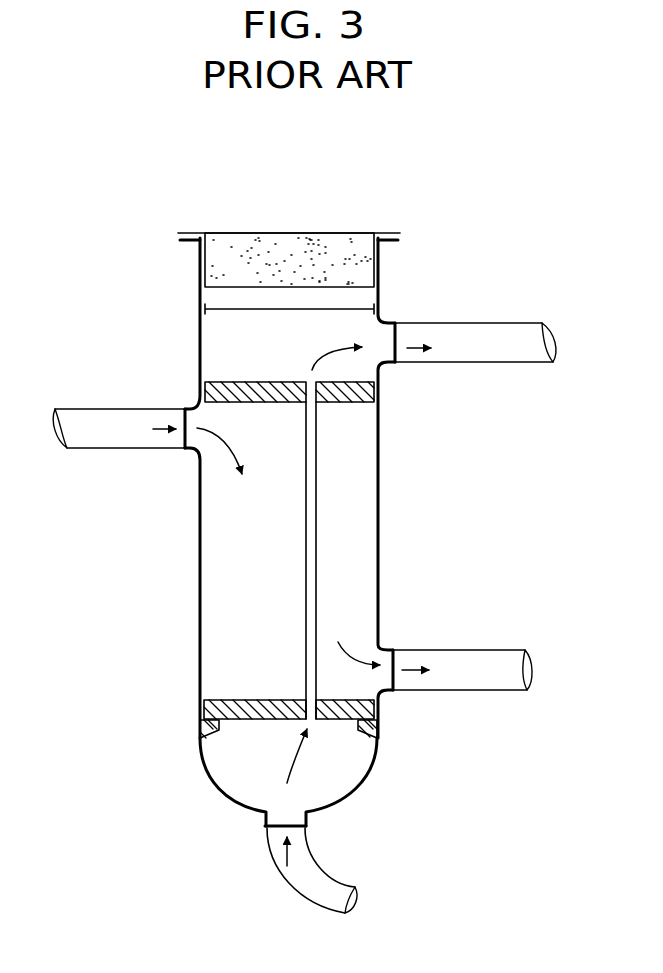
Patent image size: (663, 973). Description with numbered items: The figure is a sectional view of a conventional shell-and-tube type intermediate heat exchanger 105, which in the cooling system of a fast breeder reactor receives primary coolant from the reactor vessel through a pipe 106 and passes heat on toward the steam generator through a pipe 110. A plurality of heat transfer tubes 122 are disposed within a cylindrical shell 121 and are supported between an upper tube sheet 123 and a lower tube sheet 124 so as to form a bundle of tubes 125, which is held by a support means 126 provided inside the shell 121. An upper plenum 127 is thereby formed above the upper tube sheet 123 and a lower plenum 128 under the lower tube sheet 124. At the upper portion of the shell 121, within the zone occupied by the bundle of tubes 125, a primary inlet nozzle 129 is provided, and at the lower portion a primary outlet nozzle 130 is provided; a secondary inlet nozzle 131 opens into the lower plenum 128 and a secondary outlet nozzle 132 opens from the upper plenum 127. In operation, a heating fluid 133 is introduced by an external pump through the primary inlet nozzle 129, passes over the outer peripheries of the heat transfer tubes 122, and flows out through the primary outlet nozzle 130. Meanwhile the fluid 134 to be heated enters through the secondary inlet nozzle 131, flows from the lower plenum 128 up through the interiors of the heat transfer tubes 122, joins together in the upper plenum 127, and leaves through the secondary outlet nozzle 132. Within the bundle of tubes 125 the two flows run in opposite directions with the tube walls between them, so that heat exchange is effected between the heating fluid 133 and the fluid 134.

The intermediate heat exchanger 105 is at (415, 194).
The pipe 106 is at (107, 409).
The pipe 110 is at (503, 323).
The cylindrical shell 121 is at (199, 570).
The heat transfer tube 122 is at (305, 573).
The upper tube sheet 123 is at (230, 382).
The lower tube sheet 124 is at (254, 720).
The bundle of tubes 125 is at (297, 542).
The support means 126 is at (213, 742).
The upper plenum 127 is at (308, 349).
The lower plenum 128 is at (350, 774).
The primary inlet nozzle 129 is at (185, 406).
The primary outlet nozzle 130 is at (393, 692).
The secondary inlet nozzle 131 is at (305, 824).
The secondary outlet nozzle 132 is at (395, 365).
The heating fluid 133 is at (158, 429).
The fluid to be heated 134 is at (287, 866).